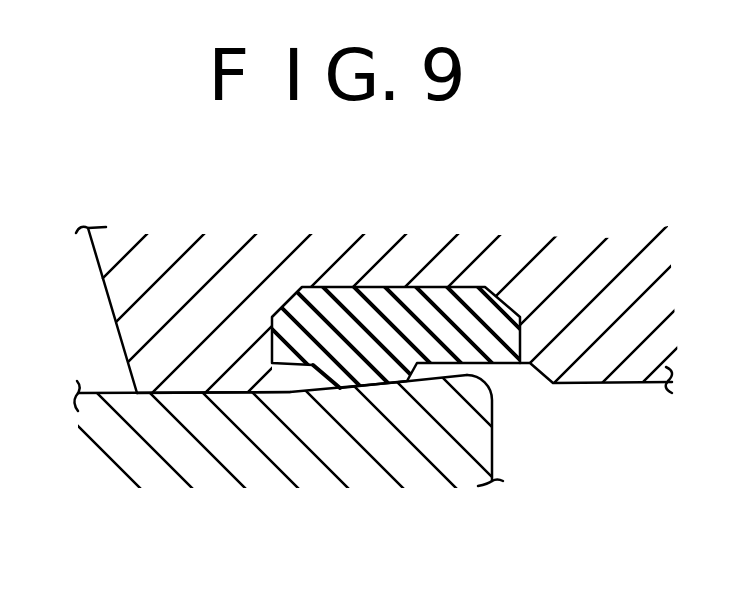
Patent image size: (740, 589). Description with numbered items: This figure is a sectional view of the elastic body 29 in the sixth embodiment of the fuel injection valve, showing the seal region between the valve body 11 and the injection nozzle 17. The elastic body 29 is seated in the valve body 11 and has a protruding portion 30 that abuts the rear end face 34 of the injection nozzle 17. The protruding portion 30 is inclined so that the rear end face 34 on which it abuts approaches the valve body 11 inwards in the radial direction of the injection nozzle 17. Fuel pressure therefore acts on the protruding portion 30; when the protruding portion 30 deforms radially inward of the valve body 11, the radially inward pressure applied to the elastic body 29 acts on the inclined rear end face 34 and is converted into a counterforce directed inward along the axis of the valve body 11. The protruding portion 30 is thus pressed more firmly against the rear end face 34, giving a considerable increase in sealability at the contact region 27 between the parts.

The valve body 11 is at (216, 262).
The injection nozzle 17 is at (208, 438).
The contact interface 27 is at (162, 393).
The elastic body 29 is at (485, 286).
The protruding portion 30 is at (383, 358).
The rear end face 34 is at (426, 380).